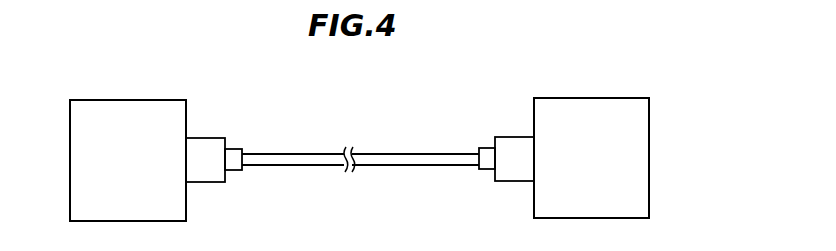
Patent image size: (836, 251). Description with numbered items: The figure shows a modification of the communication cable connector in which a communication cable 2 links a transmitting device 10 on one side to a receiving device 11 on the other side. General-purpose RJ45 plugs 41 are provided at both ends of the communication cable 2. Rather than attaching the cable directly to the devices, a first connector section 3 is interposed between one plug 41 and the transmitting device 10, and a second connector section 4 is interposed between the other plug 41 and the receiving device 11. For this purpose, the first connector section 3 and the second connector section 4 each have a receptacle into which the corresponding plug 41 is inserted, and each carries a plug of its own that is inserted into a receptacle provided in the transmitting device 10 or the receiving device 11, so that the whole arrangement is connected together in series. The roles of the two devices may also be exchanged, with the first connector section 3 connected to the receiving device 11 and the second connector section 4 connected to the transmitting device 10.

The transmitting device 10 is at (70, 100).
The receiving device 11 is at (649, 98).
The communication cable 2 is at (277, 154).
The first connector section 3 is at (226, 138).
The second connector section 4 is at (495, 137).
The plug 41 is at (242, 171).